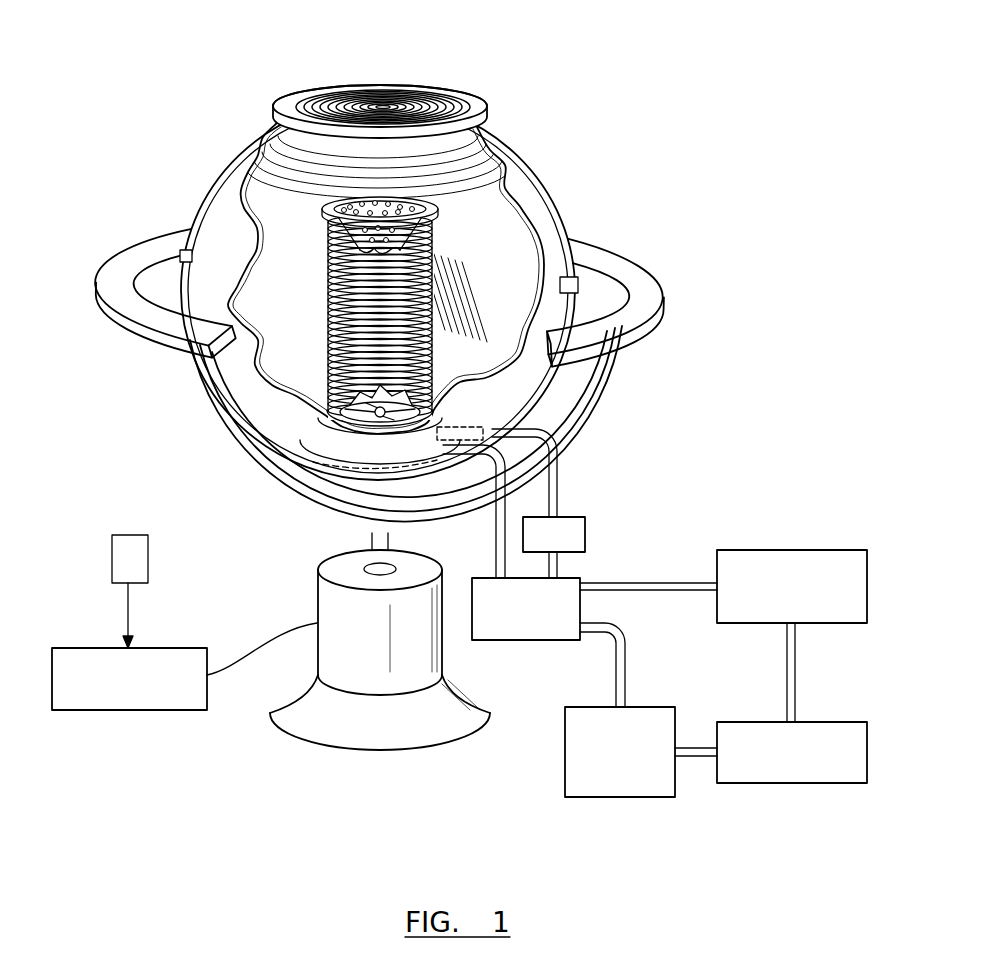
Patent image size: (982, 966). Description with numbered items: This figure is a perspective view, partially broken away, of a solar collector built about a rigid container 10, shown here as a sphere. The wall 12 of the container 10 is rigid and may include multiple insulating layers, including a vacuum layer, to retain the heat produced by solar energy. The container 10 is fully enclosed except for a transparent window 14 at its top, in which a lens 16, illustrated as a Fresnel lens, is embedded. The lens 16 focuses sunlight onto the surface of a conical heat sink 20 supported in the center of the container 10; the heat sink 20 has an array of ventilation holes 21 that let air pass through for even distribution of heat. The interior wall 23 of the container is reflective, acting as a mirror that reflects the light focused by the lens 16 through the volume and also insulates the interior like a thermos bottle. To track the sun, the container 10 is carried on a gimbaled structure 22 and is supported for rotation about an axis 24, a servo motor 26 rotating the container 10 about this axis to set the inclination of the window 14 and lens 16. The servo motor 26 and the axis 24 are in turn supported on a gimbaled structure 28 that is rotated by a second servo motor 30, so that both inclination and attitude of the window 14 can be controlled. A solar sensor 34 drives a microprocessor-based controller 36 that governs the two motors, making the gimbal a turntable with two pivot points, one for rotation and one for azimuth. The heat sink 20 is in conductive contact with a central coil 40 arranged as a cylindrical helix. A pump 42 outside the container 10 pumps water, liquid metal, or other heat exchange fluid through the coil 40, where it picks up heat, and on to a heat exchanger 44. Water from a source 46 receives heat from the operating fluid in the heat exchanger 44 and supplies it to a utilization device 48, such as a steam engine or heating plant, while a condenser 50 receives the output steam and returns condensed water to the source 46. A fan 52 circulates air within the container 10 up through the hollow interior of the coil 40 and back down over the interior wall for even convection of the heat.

The container 10 is at (574, 118).
The wall 12 is at (257, 262).
The transparent window 14 is at (460, 97).
The lens 16 is at (420, 100).
The conical heat sink 20 is at (421, 200).
The ventilation holes 21 is at (348, 213).
The gimbaled structure 22 is at (158, 384).
The interior wall 23 is at (481, 223).
The axis 24 is at (185, 250).
The servo motor 26 is at (592, 290).
The gimbaled structure 28 is at (268, 478).
The servo motor 30 is at (368, 637).
The solar sensor 34 is at (148, 560).
The microprocessor-based controller 36 is at (140, 710).
The central coil 40 is at (432, 300).
The pump 42 is at (587, 531).
The heat exchanger 44 is at (556, 642).
The water source 46 is at (655, 707).
The utilization device 48 is at (800, 551).
The condenser 50 is at (821, 722).
The fan 52 is at (382, 422).